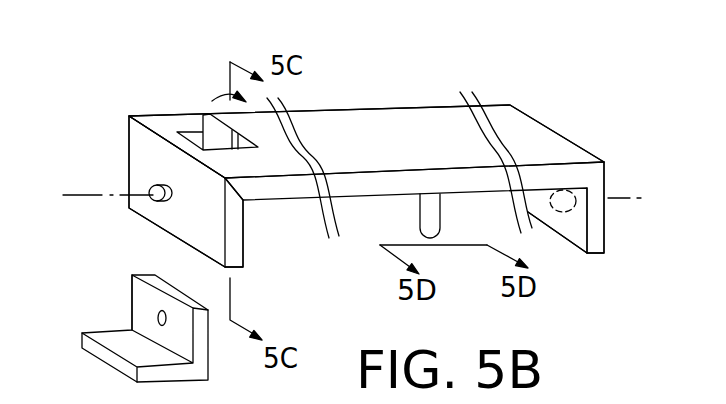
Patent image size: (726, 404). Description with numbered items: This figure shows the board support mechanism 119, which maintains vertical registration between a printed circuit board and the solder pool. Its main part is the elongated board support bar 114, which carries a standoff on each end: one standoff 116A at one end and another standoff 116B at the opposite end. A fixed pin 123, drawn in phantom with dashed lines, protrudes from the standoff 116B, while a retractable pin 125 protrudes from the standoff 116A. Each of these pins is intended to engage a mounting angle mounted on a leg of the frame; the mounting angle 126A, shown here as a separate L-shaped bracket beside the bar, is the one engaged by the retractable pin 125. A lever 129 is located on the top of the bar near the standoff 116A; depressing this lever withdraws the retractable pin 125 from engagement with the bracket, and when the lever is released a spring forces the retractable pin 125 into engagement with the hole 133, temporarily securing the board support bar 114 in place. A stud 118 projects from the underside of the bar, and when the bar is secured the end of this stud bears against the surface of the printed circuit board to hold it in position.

The board support mechanism 119 is at (177, 64).
The board support bar 114 is at (387, 124).
The lever 129 is at (212, 129).
The retractable pin 125 is at (164, 201).
The standoff 116A is at (237, 247).
The standoff 116B is at (570, 233).
The stud 118 is at (420, 212).
The fixed pin 123 is at (583, 212).
The mounting angle 126A is at (142, 297).
The hole 133 is at (158, 318).